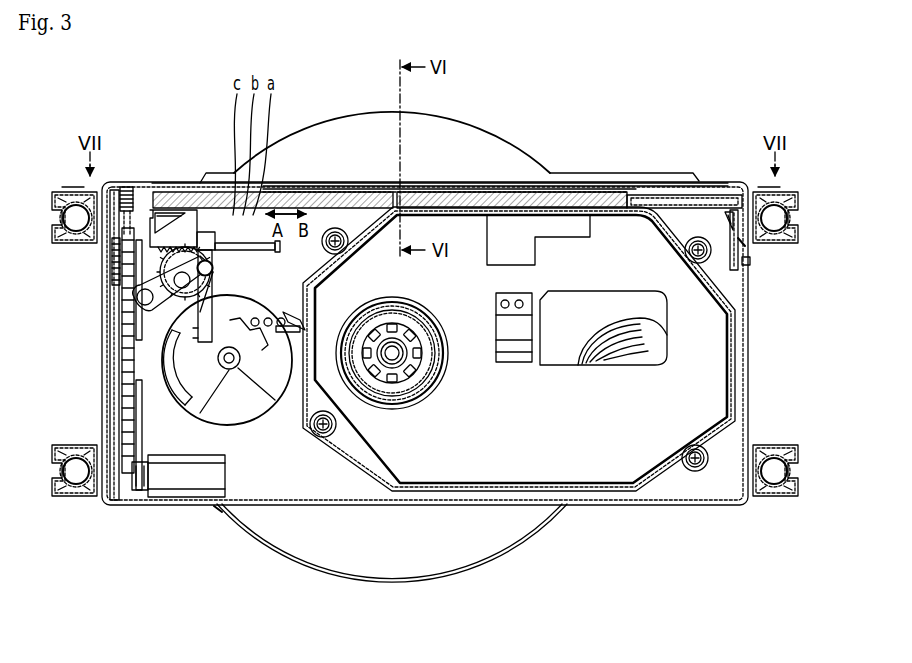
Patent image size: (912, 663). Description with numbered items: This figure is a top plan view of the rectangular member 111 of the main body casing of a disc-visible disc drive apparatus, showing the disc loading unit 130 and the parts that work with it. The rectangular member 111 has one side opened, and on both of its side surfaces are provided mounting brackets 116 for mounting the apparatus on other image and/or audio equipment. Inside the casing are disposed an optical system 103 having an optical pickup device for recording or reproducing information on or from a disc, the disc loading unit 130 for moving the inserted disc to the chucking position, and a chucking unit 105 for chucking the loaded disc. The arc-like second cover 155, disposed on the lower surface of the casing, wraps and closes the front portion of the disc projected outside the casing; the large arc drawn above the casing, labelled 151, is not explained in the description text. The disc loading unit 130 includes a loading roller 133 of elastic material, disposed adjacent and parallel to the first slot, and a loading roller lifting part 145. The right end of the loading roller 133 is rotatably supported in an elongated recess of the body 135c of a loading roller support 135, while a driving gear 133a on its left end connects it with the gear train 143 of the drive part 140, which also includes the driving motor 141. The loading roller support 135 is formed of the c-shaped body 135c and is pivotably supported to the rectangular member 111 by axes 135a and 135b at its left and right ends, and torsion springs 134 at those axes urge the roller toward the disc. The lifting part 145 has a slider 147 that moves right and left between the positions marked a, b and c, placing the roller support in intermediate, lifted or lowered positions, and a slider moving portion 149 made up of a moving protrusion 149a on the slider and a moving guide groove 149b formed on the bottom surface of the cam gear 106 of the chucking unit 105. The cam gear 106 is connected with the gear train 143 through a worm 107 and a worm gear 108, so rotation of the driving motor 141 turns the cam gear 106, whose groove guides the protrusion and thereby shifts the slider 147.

The disc loading unit 130 is at (150, 112).
The optical system 103 is at (540, 297).
The chucking unit 105 is at (247, 513).
The cam gear 106 is at (172, 500).
The worm 107 is at (203, 185).
The worm gear 108 is at (103, 318).
The rectangular member 111 is at (680, 508).
The mounting brackets 116 is at (74, 190).
The loading roller 133 is at (455, 188).
The driving gear 133a is at (128, 187).
The torsion springs 134 is at (745, 246).
The loading roller support 135 is at (708, 183).
The axis 135a is at (122, 265).
The axis 135b is at (752, 264).
The body 135c is at (650, 192).
The drive part 140 is at (138, 596).
The driving motor 141 is at (183, 476).
The gear train 143 is at (106, 332).
The loading roller lifting part 145 is at (343, 177).
The slider 147 is at (312, 185).
The slider moving portion 149 is at (360, 299).
The moving protrusion 149a is at (285, 316).
The moving guide groove 149b is at (290, 326).
The disc 151 is at (433, 128).
The second cover 155 is at (403, 580).